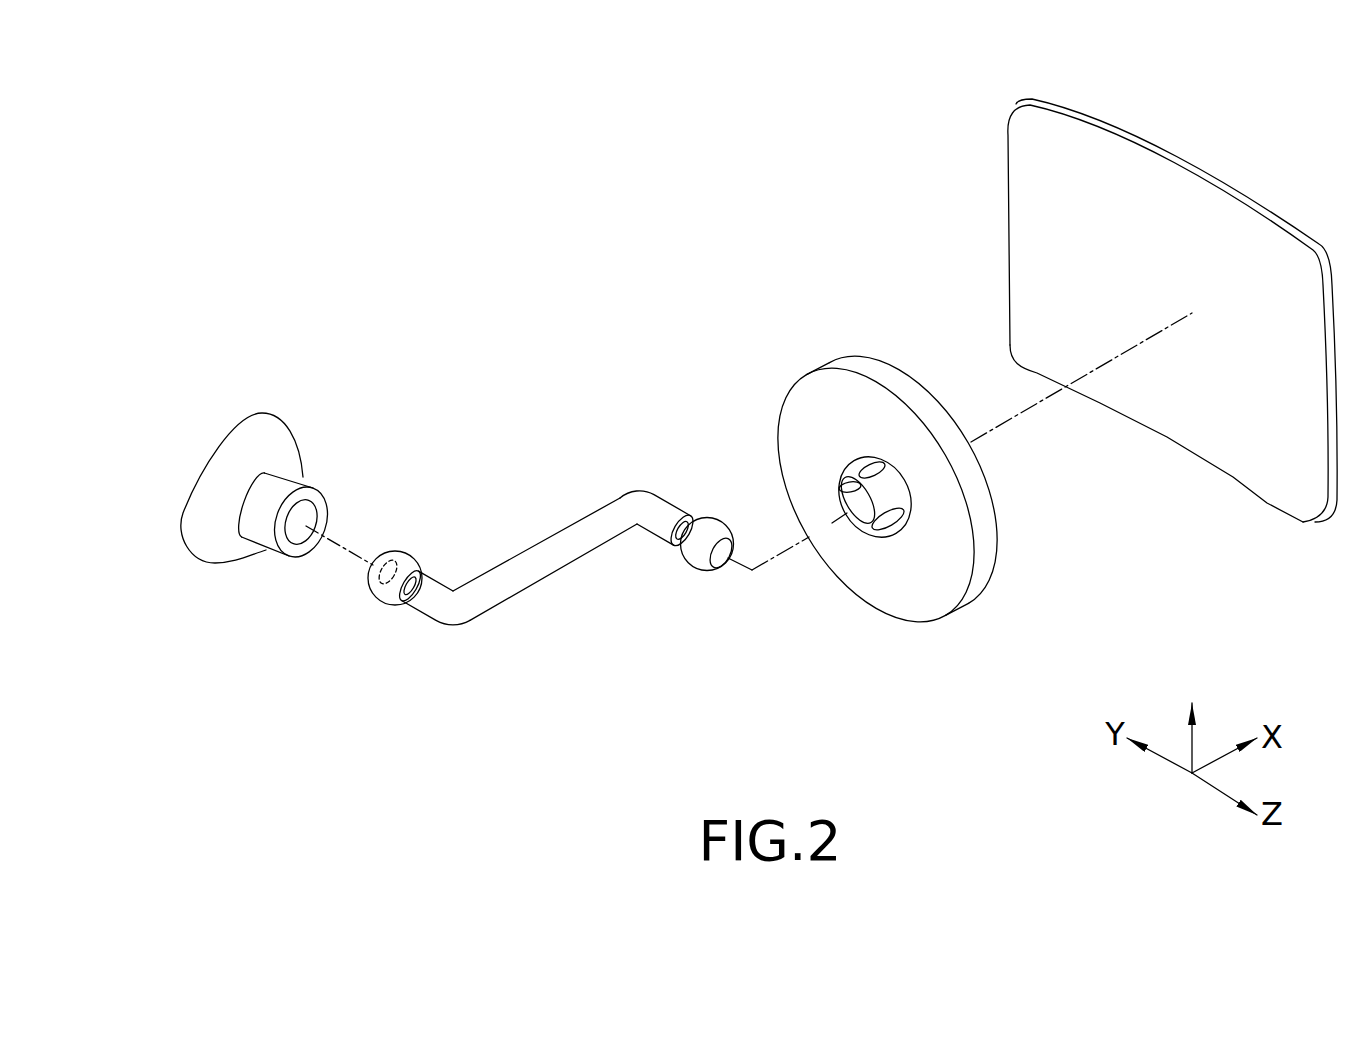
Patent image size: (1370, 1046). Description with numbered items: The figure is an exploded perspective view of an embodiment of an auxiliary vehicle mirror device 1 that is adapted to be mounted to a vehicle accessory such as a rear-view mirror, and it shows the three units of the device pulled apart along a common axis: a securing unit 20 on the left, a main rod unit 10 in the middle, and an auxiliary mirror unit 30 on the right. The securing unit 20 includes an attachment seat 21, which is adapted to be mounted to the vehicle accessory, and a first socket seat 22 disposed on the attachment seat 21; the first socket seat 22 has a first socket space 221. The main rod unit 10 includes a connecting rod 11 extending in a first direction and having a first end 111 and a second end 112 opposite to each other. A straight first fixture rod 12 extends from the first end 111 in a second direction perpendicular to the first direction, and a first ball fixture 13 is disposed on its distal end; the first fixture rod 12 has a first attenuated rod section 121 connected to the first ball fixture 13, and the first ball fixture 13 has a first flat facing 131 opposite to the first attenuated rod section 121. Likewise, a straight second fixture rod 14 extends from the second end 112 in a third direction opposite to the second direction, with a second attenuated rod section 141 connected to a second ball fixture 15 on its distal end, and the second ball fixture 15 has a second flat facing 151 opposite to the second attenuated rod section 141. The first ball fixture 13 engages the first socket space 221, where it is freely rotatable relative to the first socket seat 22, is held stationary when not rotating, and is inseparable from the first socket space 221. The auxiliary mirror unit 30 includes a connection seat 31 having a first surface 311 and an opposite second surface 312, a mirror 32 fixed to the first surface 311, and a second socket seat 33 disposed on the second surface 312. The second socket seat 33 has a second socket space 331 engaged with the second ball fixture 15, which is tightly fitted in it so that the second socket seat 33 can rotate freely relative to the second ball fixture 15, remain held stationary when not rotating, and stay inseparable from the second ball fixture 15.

The auxiliary vehicle mirror device 1 is at (1221, 157).
The mirror 32 is at (1259, 480).
The securing unit 20 is at (251, 410).
The attachment seat 21 is at (192, 510).
The first socket seat 22 is at (292, 488).
The first socket space 221 is at (313, 512).
The main rod unit 10 is at (502, 553).
The connecting rod 11 is at (557, 572).
The first end 111 is at (453, 621).
The second end 112 is at (630, 528).
The first fixture rod 12 is at (423, 618).
The first attenuated rod section 121 is at (407, 600).
The first ball fixture 13 is at (380, 597).
The first flat facing 131 is at (374, 575).
The second fixture rod 14 is at (666, 500).
The second attenuated rod section 141 is at (686, 519).
The second ball fixture 15 is at (694, 571).
The second flat facing 151 is at (724, 560).
The auxiliary mirror unit 30 is at (857, 353).
The connection seat 31 is at (898, 518).
The first surface 311 is at (995, 549).
The second surface 312 is at (932, 600).
The second socket seat 33 is at (885, 530).
The second socket space 331 is at (865, 512).